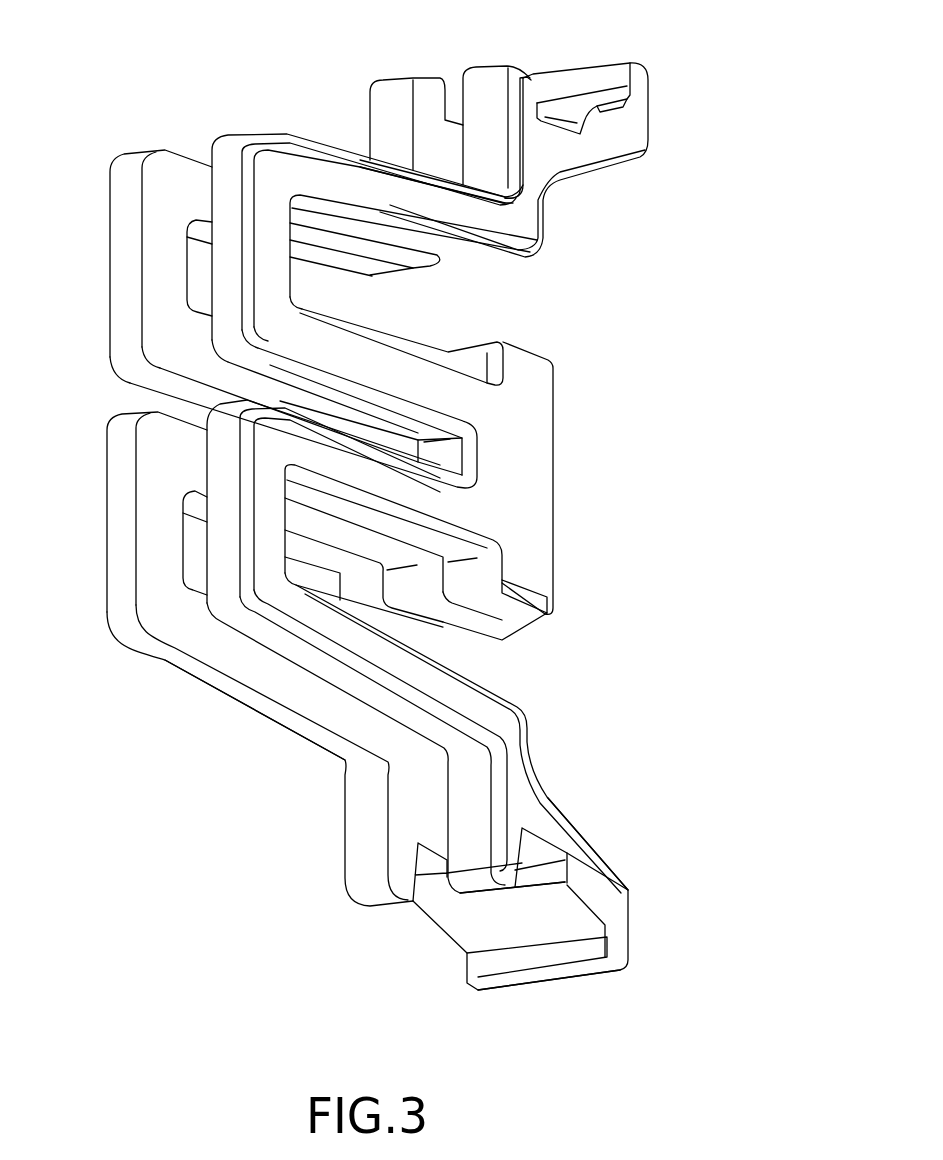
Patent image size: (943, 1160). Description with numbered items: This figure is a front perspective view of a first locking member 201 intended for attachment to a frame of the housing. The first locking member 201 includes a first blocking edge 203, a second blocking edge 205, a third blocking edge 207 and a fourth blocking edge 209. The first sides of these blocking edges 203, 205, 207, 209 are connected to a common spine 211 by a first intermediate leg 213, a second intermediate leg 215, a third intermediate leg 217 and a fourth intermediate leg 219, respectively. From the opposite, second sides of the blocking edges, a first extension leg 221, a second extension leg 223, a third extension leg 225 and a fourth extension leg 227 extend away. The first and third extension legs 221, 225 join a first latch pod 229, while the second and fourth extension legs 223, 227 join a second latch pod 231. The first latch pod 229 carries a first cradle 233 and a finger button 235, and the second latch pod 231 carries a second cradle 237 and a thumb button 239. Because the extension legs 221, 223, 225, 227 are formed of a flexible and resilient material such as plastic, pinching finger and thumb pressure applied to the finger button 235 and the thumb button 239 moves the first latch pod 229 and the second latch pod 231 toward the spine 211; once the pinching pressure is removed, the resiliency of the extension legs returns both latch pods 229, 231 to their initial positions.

The first locking member 201 is at (668, 230).
The first blocking edge 203 is at (122, 236).
The second blocking edge 205 is at (110, 560).
The third blocking edge 207 is at (232, 193).
The fourth blocking edge 209 is at (203, 560).
The common spine 211 is at (530, 464).
The first intermediate leg 213 is at (210, 371).
The second intermediate leg 215 is at (325, 530).
The third intermediate leg 217 is at (407, 376).
The fourth intermediate leg 219 is at (390, 483).
The first extension leg 221 is at (322, 258).
The second extension leg 223 is at (308, 687).
The third extension leg 225 is at (378, 193).
The fourth extension leg 227 is at (463, 700).
The first latch pod 229 is at (672, 92).
The second latch pod 231 is at (640, 853).
The first cradle 233 is at (547, 115).
The finger button 235 is at (588, 73).
The second cradle 237 is at (527, 847).
The thumb button 239 is at (557, 978).